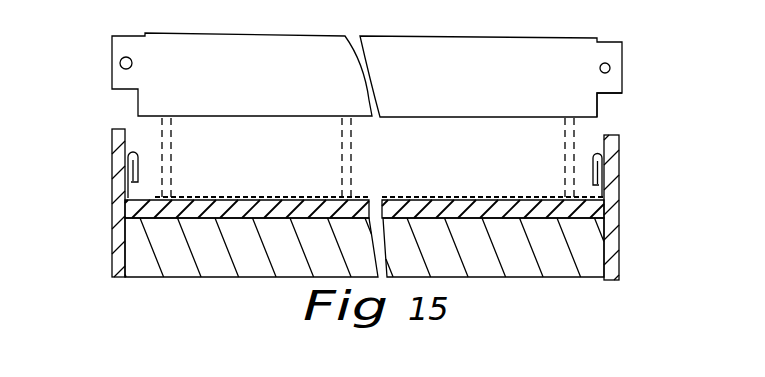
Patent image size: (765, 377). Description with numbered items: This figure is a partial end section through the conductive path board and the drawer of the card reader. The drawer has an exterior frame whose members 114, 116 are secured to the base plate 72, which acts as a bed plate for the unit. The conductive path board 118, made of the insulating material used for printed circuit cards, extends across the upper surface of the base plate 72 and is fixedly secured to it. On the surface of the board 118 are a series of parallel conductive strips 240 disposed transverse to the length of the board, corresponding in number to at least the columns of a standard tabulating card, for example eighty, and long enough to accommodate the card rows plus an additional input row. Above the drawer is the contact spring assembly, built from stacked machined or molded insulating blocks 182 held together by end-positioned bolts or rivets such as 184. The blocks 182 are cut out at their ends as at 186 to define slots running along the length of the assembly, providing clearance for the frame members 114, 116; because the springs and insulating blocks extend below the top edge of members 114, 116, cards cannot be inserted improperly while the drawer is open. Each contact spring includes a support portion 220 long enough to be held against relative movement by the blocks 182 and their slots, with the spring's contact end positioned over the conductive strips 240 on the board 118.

The insulating block 182 is at (536, 50).
The bolt or rivet 184 is at (610, 68).
The cut-out slot 186 is at (598, 104).
The frame member 114 is at (118, 166).
The frame member 116 is at (610, 167).
The base plate 72 is at (588, 250).
The conductive path board 118 is at (220, 214).
The support portion 220 is at (170, 128).
The conductive strip 240 is at (172, 196).